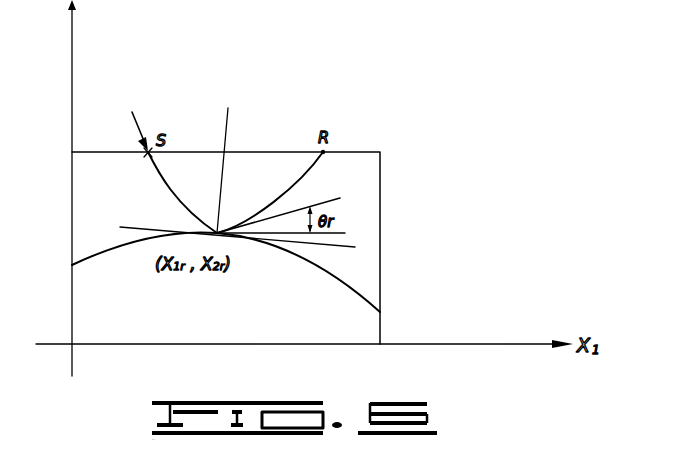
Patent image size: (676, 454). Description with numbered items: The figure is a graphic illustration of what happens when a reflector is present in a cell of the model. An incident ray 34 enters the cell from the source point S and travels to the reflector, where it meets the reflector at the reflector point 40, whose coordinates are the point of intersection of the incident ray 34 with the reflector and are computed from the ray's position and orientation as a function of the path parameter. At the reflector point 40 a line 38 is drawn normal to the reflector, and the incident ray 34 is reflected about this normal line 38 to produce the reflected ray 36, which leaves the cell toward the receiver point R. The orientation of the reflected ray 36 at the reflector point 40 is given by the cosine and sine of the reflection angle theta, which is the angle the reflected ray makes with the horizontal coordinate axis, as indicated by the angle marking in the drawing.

The incident ray 34 is at (162, 183).
The reflected ray 36 is at (302, 188).
The line normal to the reflector point 38 is at (228, 116).
The reflector point 40 is at (223, 227).